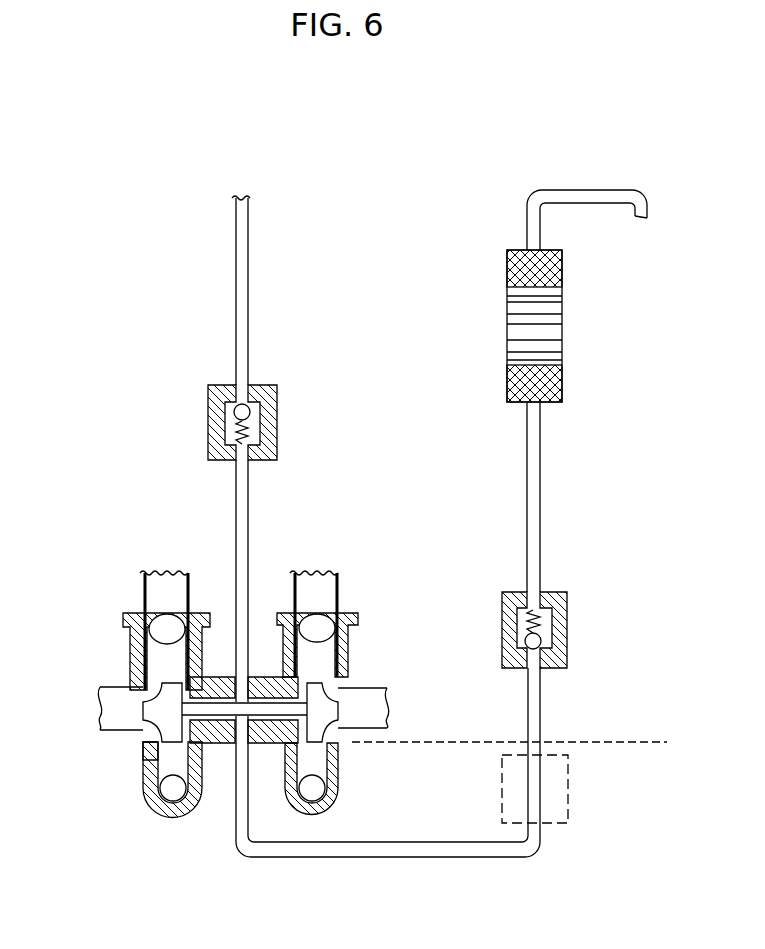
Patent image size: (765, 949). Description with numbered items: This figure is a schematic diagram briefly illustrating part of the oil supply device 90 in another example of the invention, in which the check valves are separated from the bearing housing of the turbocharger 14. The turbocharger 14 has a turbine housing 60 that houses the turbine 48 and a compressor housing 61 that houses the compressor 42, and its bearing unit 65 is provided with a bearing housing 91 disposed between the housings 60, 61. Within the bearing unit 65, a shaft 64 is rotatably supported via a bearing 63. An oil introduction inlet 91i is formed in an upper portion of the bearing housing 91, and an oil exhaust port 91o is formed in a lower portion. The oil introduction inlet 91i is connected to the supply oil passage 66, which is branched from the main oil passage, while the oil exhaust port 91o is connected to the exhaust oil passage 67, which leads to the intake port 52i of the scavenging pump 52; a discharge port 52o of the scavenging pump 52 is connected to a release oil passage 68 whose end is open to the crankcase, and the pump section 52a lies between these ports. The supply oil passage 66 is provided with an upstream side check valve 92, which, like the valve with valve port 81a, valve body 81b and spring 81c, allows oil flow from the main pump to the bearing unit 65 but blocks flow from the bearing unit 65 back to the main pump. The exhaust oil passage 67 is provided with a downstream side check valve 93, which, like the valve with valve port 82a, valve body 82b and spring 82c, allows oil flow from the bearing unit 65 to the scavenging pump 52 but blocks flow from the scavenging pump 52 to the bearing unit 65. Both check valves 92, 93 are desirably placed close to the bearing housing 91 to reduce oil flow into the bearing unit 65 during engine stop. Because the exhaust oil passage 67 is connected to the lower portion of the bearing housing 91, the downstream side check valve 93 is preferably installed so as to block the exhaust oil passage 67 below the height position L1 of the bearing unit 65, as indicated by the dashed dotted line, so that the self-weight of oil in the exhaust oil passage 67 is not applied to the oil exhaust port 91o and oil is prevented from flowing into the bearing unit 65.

The oil supply device 90 is at (133, 183).
The turbocharger 14 is at (120, 600).
The compressor 42 is at (148, 700).
The turbine 48 is at (350, 705).
The scavenging pump 52 is at (508, 250).
The discharge port 52o is at (562, 270).
The cooler core portion 52a is at (562, 330).
The intake port 52i is at (562, 383).
The turbine housing 60 is at (338, 776).
The compressor housing 61 is at (146, 802).
The bearing 63 is at (141, 682).
The shaft 64 is at (166, 712).
The bearing unit 65 is at (144, 748).
The supply oil passage 66 is at (236, 272).
The exhaust oil passage 67 is at (432, 858).
The release oil passage 68 is at (598, 190).
The valve port 81a is at (246, 405).
The valve body 81b is at (225, 420).
The spring 81c is at (258, 433).
The valve port 82a is at (530, 668).
The valve body 82b is at (546, 645).
The spring 82c is at (535, 608).
The bearing housing 91 is at (228, 670).
The oil introduction inlet 91i is at (245, 676).
The oil exhaust port 91o is at (240, 748).
The upstream side check valve 92 is at (288, 400).
The downstream side check valve 93 is at (576, 604).
The height position L1 is at (624, 741).